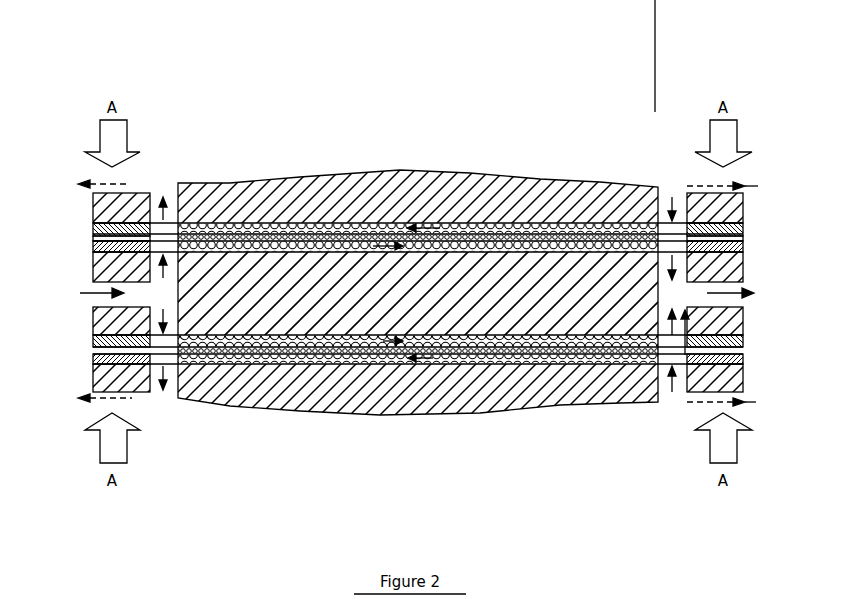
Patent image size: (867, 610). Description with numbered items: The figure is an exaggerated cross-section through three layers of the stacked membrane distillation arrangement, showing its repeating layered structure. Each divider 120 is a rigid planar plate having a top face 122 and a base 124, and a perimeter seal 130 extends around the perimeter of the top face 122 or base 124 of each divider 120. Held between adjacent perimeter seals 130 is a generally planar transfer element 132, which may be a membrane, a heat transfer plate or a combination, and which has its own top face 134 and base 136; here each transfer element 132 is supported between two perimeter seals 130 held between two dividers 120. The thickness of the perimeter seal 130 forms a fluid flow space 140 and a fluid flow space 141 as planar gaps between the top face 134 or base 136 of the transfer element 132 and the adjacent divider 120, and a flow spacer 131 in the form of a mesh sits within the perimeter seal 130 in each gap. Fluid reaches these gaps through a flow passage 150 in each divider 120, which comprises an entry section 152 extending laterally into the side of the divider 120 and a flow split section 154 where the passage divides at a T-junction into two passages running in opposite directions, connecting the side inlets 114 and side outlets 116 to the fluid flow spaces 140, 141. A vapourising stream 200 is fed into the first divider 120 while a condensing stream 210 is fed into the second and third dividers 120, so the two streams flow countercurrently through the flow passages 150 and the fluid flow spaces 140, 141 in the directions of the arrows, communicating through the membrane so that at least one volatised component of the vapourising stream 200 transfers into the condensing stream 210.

The side inlet 114 is at (745, 198).
The side outlet 116 is at (75, 182).
The divider 120 is at (515, 195).
The top face 122 is at (402, 243).
The base 124 is at (365, 405).
The perimeter seal 130 is at (93, 246).
The flow spacer 131 is at (308, 228).
The transfer element 132 is at (500, 238).
The top face 134 is at (218, 243).
The base 136 is at (540, 345).
The fluid flow space 140 is at (658, 227).
The fluid flow space 141 is at (645, 222).
The flow passage 150 is at (168, 295).
The entry section 152 is at (112, 286).
The flow split section 154 is at (97, 321).
The vapourising stream 200 is at (373, 236).
The condensing stream 210 is at (487, 441).